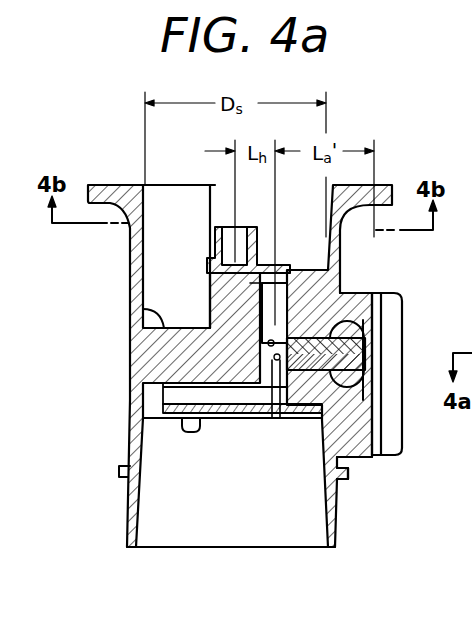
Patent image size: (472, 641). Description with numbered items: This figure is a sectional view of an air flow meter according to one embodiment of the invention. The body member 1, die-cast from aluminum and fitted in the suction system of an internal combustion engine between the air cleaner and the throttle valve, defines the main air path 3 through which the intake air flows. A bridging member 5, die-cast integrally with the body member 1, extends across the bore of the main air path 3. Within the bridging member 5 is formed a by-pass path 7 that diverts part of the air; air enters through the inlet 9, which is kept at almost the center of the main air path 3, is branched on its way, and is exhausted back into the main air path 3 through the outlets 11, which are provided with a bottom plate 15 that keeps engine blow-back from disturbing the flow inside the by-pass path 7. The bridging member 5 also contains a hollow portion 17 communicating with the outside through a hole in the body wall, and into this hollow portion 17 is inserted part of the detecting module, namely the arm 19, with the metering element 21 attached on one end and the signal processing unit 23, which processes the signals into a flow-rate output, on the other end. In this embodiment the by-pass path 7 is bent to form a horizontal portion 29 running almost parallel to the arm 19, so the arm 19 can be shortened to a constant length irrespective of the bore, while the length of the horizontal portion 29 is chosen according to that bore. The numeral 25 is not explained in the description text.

The body member 1 is at (107, 183).
The main air path 3 is at (173, 193).
The bridging member 5 is at (135, 312).
The by-pass path 7 is at (240, 420).
The inlet 9 is at (223, 227).
The outlets 11 is at (153, 414).
The bottom plate 15 is at (220, 426).
The hollow portion 17 is at (350, 320).
The arm 19 is at (360, 412).
The metering element 21 is at (274, 418).
The signal processing unit 23 is at (397, 458).
The retaining tab 25 is at (362, 460).
The horizontal portion 29 is at (297, 266).